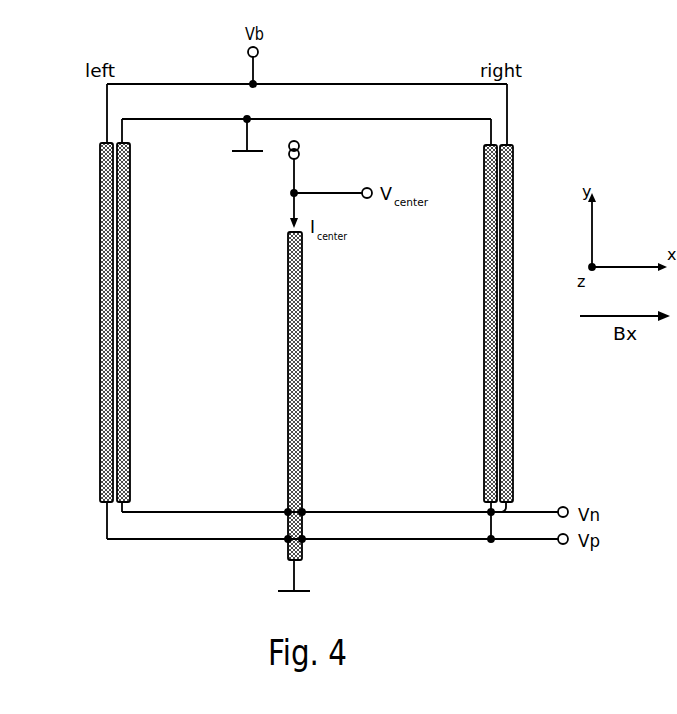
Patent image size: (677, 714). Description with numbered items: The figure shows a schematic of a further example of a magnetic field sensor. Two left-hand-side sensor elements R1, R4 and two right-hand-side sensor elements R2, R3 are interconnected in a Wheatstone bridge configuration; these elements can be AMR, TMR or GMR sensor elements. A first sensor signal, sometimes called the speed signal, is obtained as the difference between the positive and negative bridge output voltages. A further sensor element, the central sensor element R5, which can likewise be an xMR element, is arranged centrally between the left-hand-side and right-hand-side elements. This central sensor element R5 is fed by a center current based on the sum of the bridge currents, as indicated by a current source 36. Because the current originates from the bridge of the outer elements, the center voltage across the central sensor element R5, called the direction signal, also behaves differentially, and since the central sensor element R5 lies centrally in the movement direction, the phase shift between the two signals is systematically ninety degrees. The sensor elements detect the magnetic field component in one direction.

The current source 36 is at (300, 145).
The left-hand-side sensor element R1 is at (91, 322).
The right-hand-side sensor element R2 is at (473, 323).
The right-hand-side sensor element R3 is at (522, 323).
The left-hand-side sensor element R4 is at (141, 322).
The central sensor element R5 is at (312, 396).